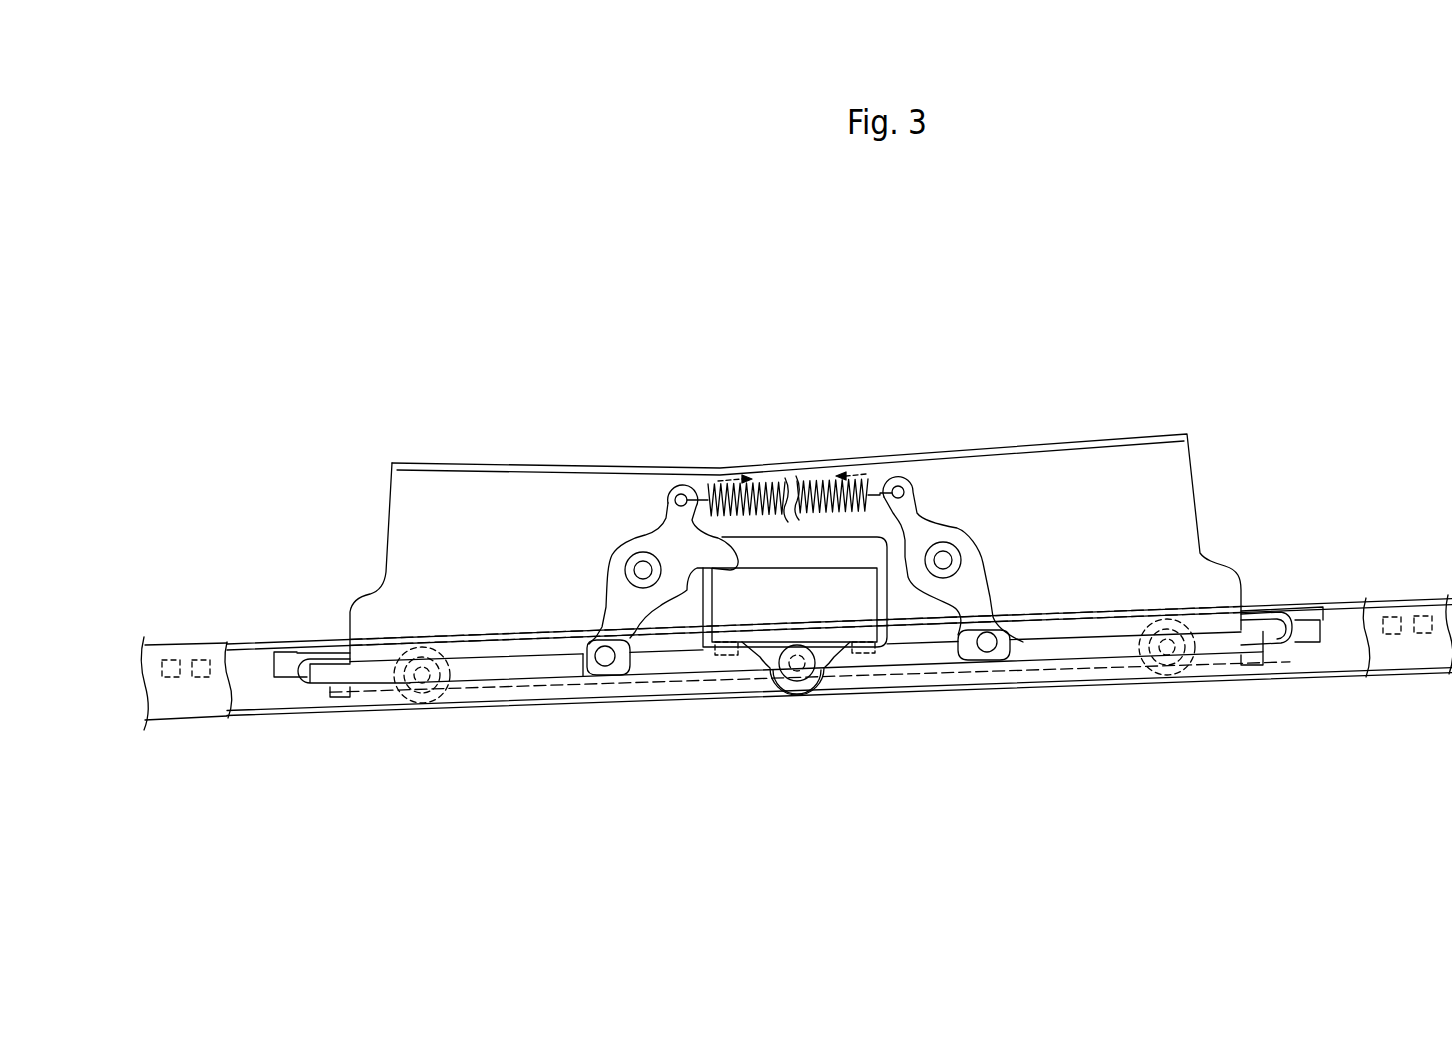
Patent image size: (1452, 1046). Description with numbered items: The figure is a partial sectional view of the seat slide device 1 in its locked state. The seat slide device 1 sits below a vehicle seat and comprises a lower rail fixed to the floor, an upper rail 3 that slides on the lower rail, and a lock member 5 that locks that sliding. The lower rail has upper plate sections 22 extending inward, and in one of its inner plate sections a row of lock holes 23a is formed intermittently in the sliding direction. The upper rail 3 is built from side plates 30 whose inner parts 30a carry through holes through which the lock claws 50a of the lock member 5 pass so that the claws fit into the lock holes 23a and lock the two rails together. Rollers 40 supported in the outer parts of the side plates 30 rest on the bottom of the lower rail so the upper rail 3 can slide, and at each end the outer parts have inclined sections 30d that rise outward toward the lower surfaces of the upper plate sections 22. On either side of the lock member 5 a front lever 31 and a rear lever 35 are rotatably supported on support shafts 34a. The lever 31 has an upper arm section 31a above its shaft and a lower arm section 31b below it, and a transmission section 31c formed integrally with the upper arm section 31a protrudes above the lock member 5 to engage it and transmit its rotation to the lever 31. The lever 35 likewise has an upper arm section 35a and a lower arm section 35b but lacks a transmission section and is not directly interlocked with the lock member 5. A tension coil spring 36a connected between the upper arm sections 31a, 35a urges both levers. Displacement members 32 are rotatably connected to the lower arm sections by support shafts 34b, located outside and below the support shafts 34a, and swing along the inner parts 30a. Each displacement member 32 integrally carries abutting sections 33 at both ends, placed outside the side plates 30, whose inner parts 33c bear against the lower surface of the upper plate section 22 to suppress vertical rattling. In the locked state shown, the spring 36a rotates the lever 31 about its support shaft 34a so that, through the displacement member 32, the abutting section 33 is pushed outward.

The seat slide device 1 is at (1172, 330).
The upper rail 3 is at (1055, 440).
The lock member 5 is at (760, 620).
The upper plate section 22 is at (1322, 603).
The lock hole 23a is at (1414, 610).
The side plate 30 is at (800, 577).
The inner part 30a is at (677, 663).
The inclined section 30d is at (287, 680).
The lever 31 is at (666, 521).
The upper arm section 31a is at (681, 493).
The lower arm section 31b is at (612, 597).
The transmission section 31c is at (745, 558).
The displacement member 32 is at (520, 672).
The abutting section 33 is at (781, 607).
The inner part 33c is at (313, 650).
The support shaft 34a is at (643, 570).
The support shaft 34b is at (605, 667).
The lever 35 is at (972, 512).
The upper arm section 35a is at (898, 486).
The lower arm section 35b is at (985, 585).
The tension coil spring 36a is at (787, 497).
The roller 40 is at (433, 690).
The lock claw 50a is at (872, 660).